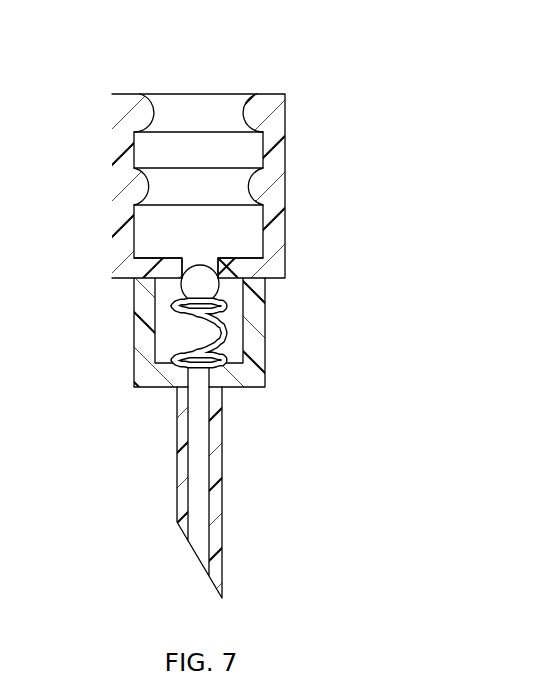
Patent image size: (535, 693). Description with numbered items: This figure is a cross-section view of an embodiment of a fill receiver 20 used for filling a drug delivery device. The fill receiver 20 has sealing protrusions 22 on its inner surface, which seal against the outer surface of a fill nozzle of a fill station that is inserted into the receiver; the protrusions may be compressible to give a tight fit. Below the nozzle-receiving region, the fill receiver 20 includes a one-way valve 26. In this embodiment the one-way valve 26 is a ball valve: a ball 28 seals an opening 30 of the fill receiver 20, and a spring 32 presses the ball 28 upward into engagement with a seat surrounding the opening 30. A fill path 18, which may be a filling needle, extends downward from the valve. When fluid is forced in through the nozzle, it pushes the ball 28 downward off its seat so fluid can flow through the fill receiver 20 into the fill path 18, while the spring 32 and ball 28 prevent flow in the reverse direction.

The fill path 18 is at (222, 517).
The fill receiver 20 is at (217, 329).
The sealing protrusions 22 is at (150, 118).
The one-way valve 26 is at (185, 253).
The ball 28 is at (195, 288).
The opening 30 is at (212, 258).
The spring 32 is at (228, 332).